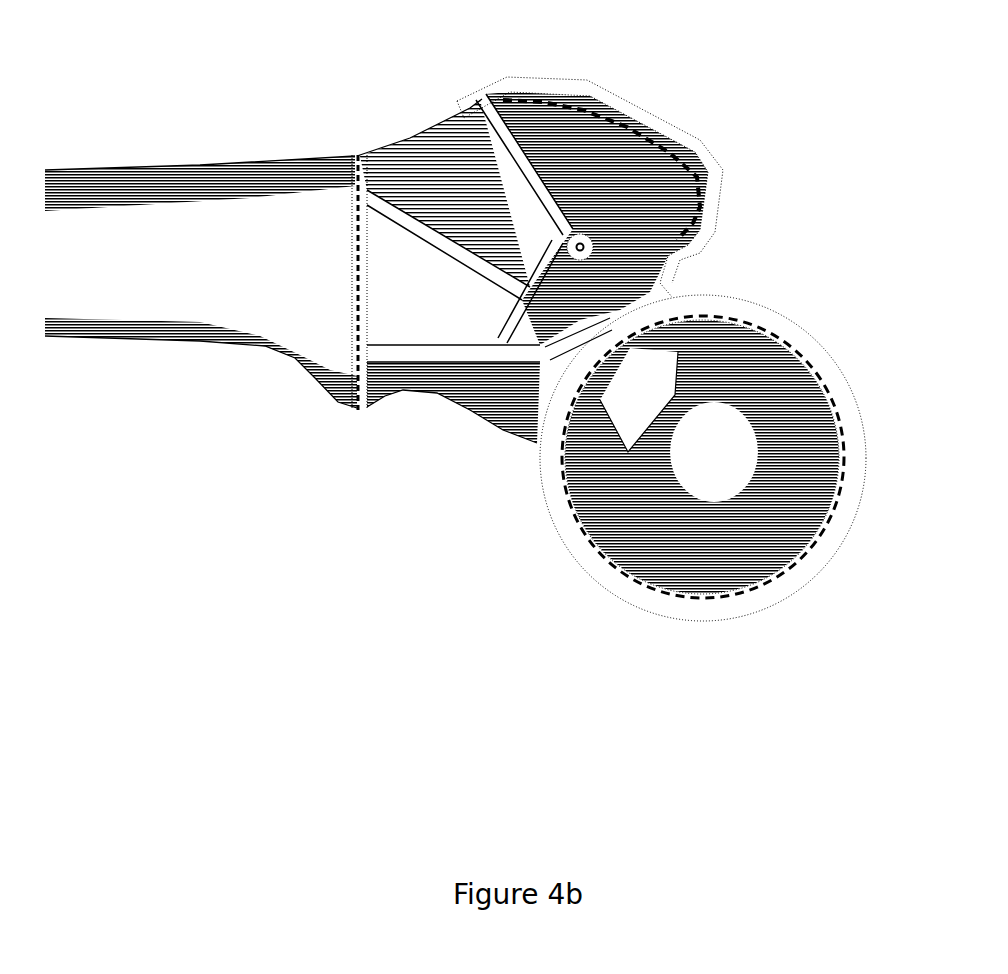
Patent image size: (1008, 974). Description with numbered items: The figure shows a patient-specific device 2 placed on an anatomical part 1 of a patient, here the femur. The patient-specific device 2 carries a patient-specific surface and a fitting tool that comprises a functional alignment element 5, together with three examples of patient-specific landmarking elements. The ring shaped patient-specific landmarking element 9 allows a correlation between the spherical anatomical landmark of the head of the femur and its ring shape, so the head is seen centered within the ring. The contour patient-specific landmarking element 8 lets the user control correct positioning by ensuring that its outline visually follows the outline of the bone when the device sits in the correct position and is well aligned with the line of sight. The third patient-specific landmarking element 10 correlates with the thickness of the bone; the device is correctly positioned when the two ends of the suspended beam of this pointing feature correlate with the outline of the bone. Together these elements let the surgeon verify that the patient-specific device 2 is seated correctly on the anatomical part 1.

The anatomical part 1 is at (201, 282).
The patient-specific device 2 is at (600, 345).
The functional alignment element 5 is at (594, 242).
The specific contour patient-specific landmarking element 8 is at (645, 115).
The specific ring shaped patient-specific landmarking element 9 is at (797, 332).
The specific patient-specific landmarking element 10 is at (358, 387).